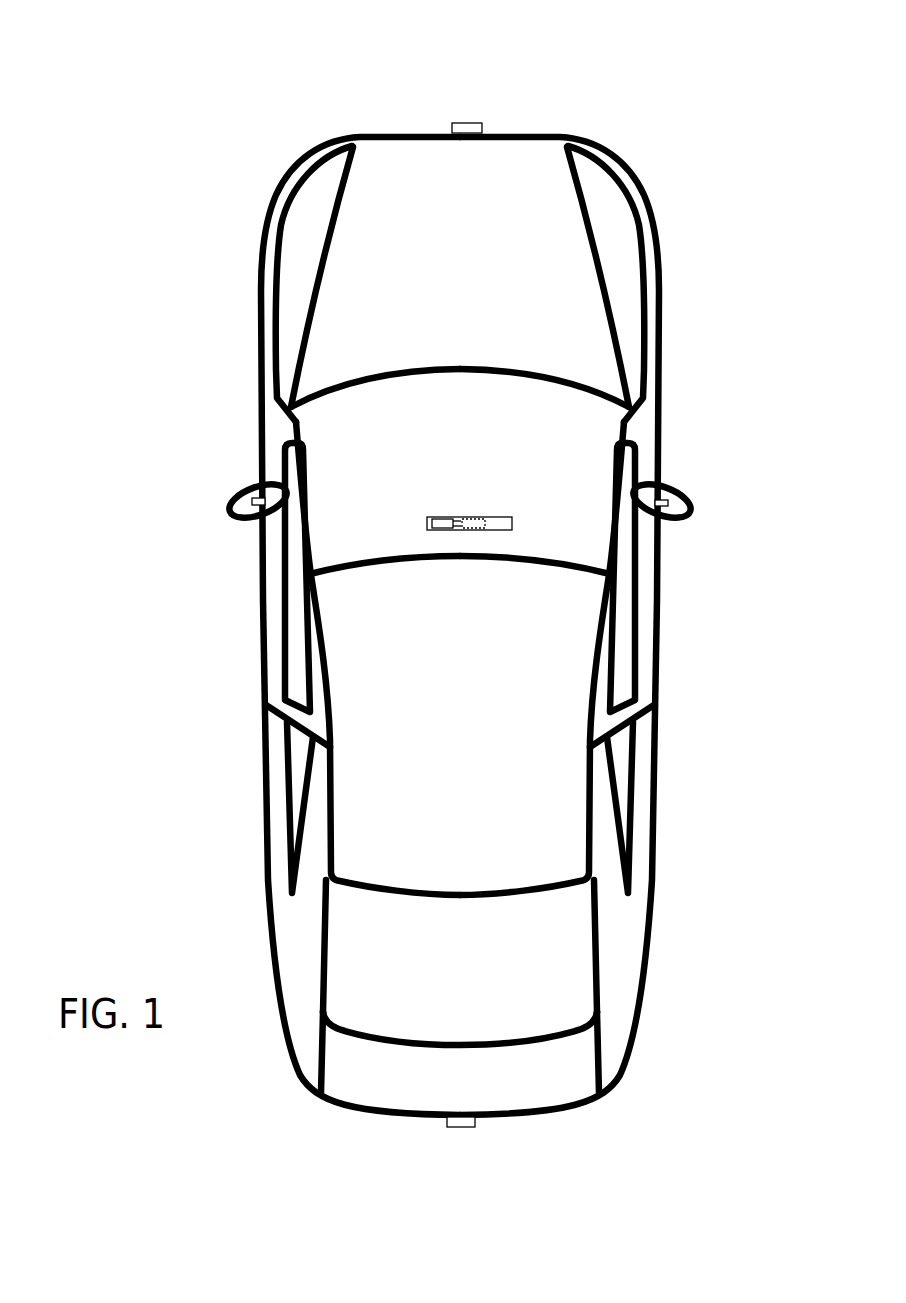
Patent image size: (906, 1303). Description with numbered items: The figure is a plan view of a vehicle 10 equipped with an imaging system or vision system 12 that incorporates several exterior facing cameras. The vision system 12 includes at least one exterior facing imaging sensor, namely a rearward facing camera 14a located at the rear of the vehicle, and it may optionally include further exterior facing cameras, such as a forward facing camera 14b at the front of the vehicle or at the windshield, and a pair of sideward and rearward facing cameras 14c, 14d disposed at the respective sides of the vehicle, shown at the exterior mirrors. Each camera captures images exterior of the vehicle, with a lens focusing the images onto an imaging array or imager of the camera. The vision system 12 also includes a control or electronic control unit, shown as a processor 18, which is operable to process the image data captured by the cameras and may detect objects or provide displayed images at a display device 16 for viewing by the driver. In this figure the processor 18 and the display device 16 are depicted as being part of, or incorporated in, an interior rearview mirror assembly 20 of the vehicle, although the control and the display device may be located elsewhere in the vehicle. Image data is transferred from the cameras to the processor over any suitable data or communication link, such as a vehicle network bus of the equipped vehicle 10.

The vehicle 10 is at (203, 222).
The vision system 12 is at (403, 1152).
The rearward facing camera 14a is at (467, 1127).
The forward facing camera 14b is at (468, 123).
The sideward/rearward facing camera 14c is at (255, 502).
The sideward/rearward facing camera 14d is at (667, 500).
The display device 16 is at (442, 518).
The processor 18 is at (465, 517).
The interior rearview mirror assembly 20 is at (512, 518).